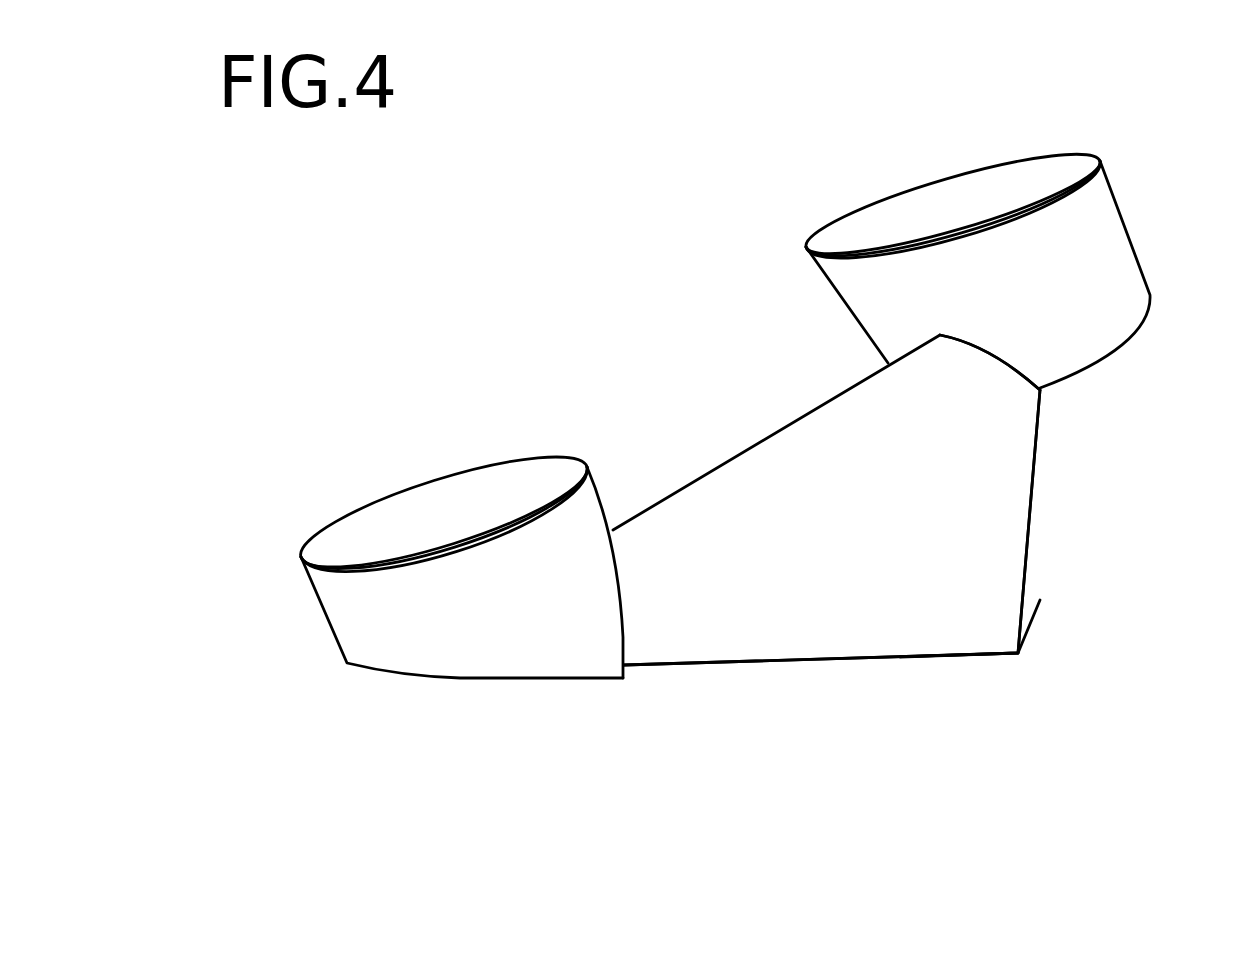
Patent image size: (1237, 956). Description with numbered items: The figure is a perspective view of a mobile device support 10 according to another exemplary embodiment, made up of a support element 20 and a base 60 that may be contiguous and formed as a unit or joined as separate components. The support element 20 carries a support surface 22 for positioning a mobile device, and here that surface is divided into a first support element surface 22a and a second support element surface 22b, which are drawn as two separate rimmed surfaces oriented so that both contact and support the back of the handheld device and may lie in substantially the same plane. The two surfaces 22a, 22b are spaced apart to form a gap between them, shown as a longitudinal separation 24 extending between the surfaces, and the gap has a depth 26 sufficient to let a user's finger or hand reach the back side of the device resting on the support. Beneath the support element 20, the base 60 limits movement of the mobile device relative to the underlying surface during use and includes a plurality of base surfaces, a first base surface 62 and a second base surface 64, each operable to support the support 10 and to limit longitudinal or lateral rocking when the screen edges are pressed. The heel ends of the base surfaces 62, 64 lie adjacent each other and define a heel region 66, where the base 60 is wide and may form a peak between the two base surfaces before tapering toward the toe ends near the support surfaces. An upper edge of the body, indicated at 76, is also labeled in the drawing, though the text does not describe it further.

The mobile device support 10 is at (702, 237).
The support element 20 is at (1117, 152).
The support surface 22 is at (402, 456).
The first support element surface 22a is at (1030, 173).
The second support element surface 22b is at (343, 540).
The longitudinal separation 24 is at (546, 438).
The depth 26 is at (616, 440).
The base 60 is at (1072, 435).
The first base surface 62 is at (662, 675).
The second base surface 64 is at (1030, 532).
The heel region 66 is at (1013, 658).
The top edge 76 is at (1015, 412).